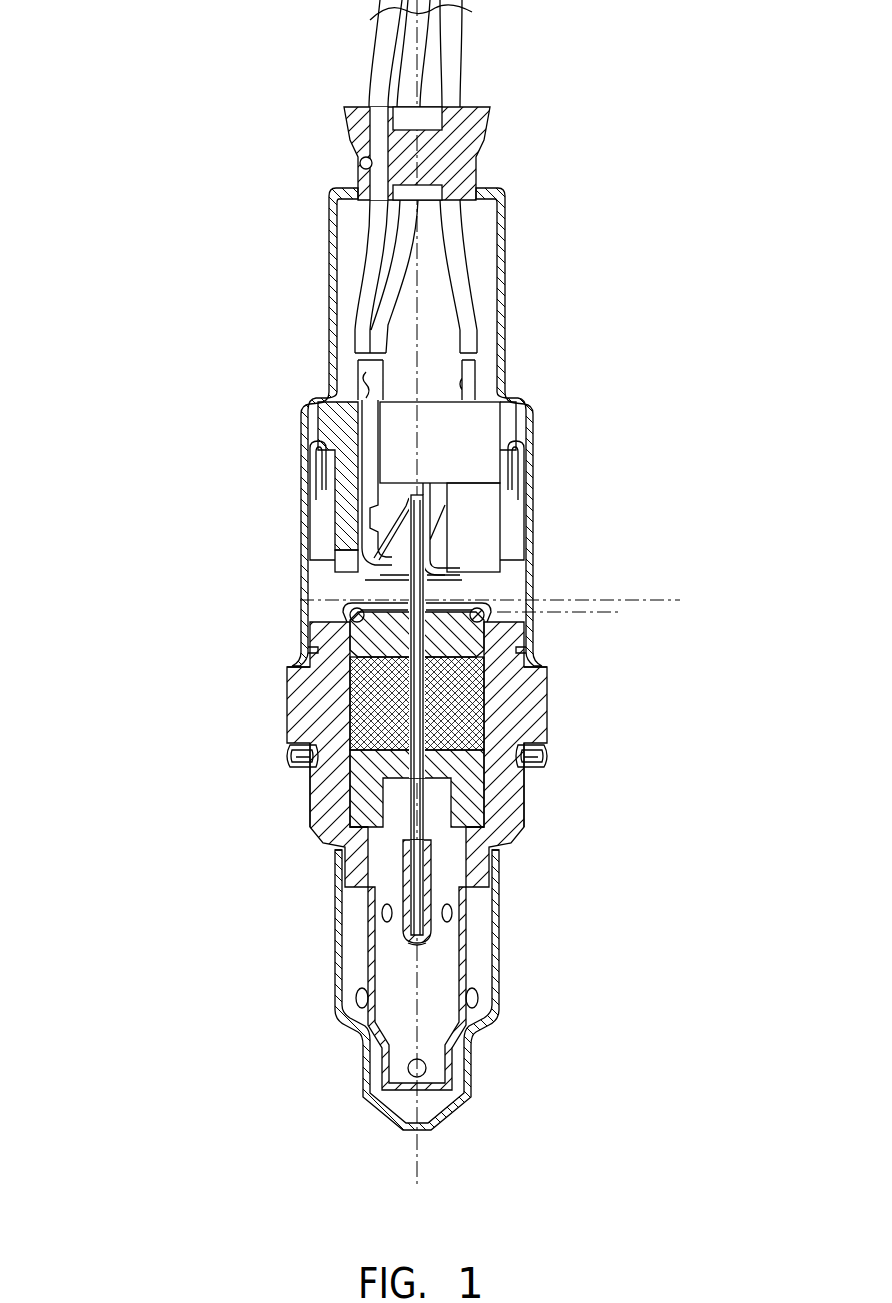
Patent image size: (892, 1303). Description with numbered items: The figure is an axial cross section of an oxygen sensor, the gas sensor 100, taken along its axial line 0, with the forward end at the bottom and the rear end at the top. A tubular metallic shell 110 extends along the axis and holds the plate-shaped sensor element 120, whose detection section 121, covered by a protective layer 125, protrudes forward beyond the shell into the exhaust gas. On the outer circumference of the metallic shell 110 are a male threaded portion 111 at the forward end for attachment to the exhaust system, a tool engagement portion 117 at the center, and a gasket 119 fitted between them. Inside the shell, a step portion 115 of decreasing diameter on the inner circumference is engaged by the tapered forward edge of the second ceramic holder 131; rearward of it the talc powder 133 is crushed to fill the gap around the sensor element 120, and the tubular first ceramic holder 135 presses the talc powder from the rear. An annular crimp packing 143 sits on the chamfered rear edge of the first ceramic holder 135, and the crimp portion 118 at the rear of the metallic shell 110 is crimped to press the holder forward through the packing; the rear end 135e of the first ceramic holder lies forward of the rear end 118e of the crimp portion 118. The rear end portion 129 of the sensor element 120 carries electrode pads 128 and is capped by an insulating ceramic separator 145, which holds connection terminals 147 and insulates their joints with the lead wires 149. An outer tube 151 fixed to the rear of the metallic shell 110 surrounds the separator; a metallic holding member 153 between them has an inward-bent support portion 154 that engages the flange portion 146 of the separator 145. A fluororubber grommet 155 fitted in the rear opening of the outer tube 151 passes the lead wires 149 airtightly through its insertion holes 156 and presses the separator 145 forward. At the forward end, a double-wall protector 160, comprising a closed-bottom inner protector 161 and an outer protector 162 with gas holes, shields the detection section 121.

The gas sensor 100 is at (628, 127).
The axial line 0 is at (419, 1174).
The metallic shell 110 is at (510, 730).
The male threaded portion 111 is at (525, 797).
The step portion 115 is at (527, 834).
The tool engagement portion 117 is at (522, 718).
The crimp portion 118 is at (470, 598).
The rear end of the crimp portion 118e is at (516, 598).
The gasket 119 is at (550, 760).
The sensor element 120 is at (343, 736).
The detection section 121 is at (413, 945).
The protective layer 125 is at (403, 927).
The electrode pads 128 is at (435, 512).
The rear end portion 129 is at (432, 493).
The second ceramic holder 131 is at (350, 788).
The talc powder 133 is at (360, 698).
The first ceramic holder 135 is at (444, 630).
The rear end of the first ceramic holder 135e is at (586, 613).
The crimp packing 143 is at (484, 618).
The separator 145 is at (343, 515).
The flange portion 146 is at (327, 417).
The connection terminals 147 is at (370, 585).
The lead wires 149 is at (447, 80).
The outer tube 151 is at (533, 559).
The holding member 153 is at (310, 497).
The support portion 154 is at (325, 462).
The grommet 155 is at (381, 153).
The insertion holes 156 is at (360, 164).
The protector 160 is at (369, 1006).
The inner protector 161 is at (396, 1096).
The outer protector 162 is at (387, 1114).